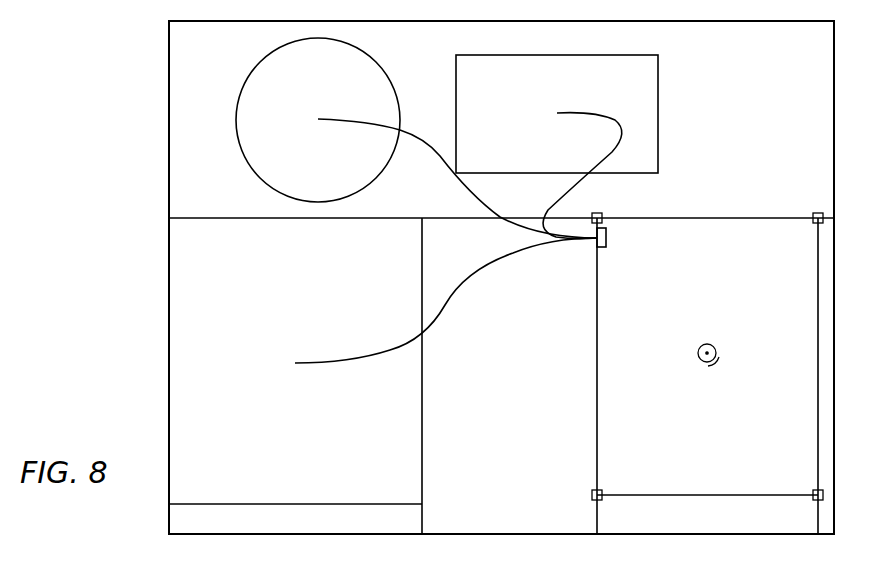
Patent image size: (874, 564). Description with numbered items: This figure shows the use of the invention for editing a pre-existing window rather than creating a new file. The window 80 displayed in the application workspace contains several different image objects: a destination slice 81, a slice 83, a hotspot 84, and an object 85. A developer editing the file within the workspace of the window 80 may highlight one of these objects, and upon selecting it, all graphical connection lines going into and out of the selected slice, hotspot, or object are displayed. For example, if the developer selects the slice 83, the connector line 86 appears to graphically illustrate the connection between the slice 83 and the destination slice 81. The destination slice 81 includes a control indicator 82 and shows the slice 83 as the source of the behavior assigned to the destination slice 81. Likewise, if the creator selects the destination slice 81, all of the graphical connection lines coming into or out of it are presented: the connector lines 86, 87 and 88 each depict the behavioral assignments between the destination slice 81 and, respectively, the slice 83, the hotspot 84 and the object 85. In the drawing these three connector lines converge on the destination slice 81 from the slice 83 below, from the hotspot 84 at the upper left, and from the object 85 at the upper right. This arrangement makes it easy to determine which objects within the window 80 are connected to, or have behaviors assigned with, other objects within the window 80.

The window 80 is at (169, 276).
The destination slice 81 is at (722, 228).
The control indicator 82 is at (716, 344).
The slice 83 is at (418, 424).
The hotspot 84 is at (250, 72).
The object 85 is at (658, 113).
The connector line 86 is at (458, 292).
The connector line 87 is at (428, 146).
The connector line 88 is at (570, 188).